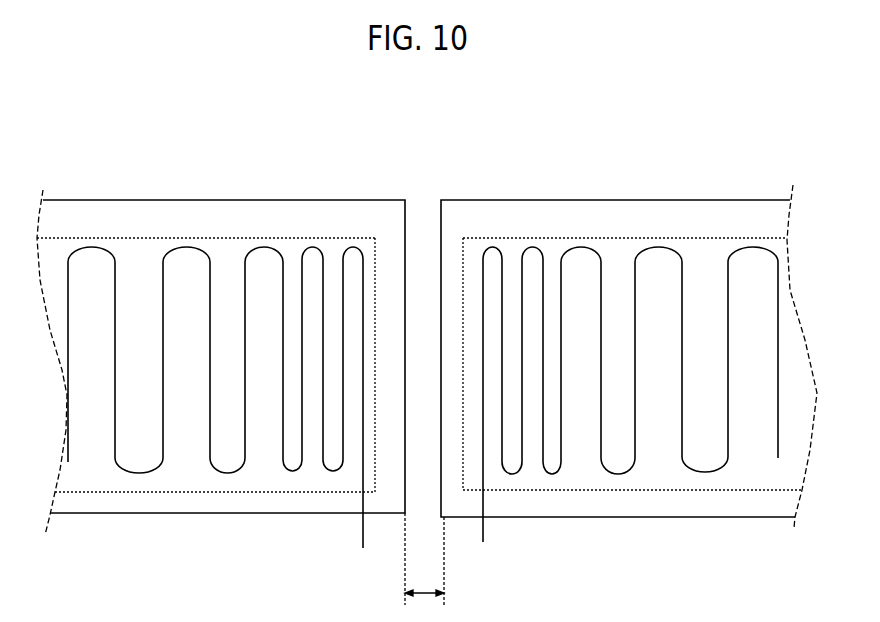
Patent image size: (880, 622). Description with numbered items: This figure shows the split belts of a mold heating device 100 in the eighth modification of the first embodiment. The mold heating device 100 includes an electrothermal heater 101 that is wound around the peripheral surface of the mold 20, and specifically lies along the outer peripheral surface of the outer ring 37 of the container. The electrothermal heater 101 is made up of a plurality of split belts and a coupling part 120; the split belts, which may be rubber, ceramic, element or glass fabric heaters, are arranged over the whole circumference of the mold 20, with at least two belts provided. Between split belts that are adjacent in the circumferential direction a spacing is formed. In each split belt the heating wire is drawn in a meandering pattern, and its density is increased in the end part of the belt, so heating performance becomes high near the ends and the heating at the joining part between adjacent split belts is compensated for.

The coupling part 120 is at (427, 265).
The mold 20 is at (629, 330).
The outer ring 37 is at (565, 201).
The mold heating device 100 is at (158, 500).
The electrothermal heater 101 is at (240, 495).